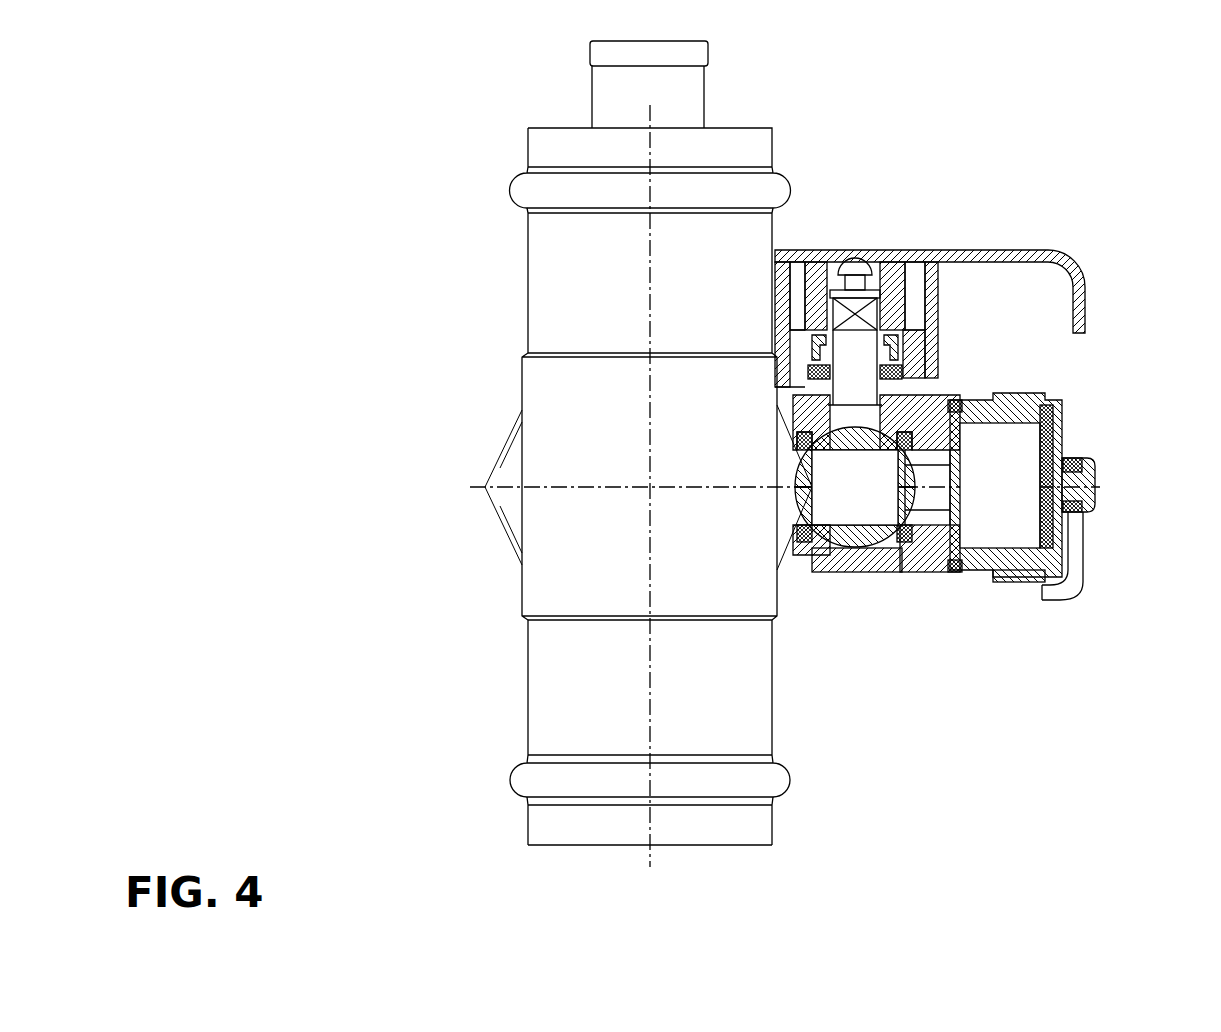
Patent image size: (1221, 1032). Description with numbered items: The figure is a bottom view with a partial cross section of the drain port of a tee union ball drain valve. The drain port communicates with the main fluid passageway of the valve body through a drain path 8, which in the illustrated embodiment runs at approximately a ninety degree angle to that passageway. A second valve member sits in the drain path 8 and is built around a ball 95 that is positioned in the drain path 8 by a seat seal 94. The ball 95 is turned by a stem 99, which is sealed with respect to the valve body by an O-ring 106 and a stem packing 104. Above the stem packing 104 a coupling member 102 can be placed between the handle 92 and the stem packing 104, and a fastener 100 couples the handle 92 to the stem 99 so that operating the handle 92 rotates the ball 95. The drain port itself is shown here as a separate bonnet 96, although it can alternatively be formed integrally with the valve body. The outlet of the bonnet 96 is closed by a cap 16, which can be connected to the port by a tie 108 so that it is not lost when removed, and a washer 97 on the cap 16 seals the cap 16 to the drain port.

The drain path 8 is at (945, 560).
The cap 16 is at (1023, 582).
The handle 92 is at (995, 250).
The seat seal 94 is at (800, 548).
The ball 95 is at (887, 565).
The bonnet 96 is at (947, 407).
The washer 97 is at (1052, 440).
The stem 99 is at (893, 352).
The fastener 100 is at (858, 252).
The coupling member 102 is at (900, 340).
The stem packing 104 is at (905, 375).
The O-ring 106 is at (800, 405).
The tie 108 is at (1080, 563).